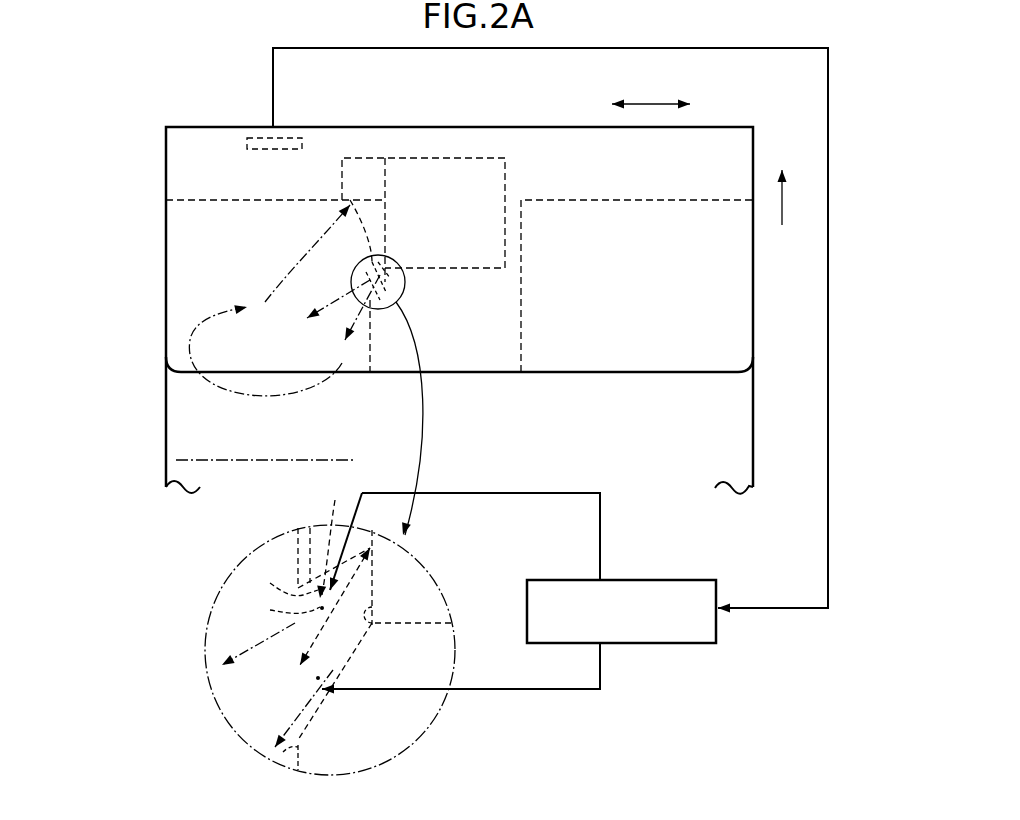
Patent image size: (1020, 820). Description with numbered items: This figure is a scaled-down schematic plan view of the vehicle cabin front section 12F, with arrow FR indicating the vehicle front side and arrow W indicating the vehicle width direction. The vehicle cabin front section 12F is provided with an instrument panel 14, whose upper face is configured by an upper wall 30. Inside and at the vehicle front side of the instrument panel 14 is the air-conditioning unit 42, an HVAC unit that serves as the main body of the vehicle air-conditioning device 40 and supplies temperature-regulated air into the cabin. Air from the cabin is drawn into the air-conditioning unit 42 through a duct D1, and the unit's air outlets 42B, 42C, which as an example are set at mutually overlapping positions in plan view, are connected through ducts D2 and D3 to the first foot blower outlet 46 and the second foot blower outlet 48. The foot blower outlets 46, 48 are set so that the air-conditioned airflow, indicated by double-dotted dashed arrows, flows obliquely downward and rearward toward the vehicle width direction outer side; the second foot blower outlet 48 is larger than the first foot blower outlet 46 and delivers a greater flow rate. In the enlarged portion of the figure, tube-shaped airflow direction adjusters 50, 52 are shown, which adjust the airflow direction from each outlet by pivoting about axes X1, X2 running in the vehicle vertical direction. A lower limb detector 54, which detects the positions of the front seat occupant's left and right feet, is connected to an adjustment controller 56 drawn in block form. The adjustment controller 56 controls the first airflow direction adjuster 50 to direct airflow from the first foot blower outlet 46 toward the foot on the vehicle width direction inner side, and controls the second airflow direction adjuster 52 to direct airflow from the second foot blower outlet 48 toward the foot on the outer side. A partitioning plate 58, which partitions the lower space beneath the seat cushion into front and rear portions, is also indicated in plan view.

The vehicle cabin front section 12F is at (133, 232).
The instrument panel 14 is at (722, 300).
The upper wall 30 is at (723, 337).
The lower limb detector 54 is at (263, 150).
The vehicle air-conditioning device 40 is at (465, 148).
The air-conditioning unit 42 is at (435, 149).
The air outlet 42B is at (375, 602).
The air outlet 42C is at (377, 560).
The first foot blower outlet 46 is at (273, 760).
The second foot blower outlet 48 is at (303, 595).
The first airflow direction adjuster 50 is at (342, 677).
The second airflow direction adjuster 52 is at (310, 528).
The adjustment controller 56 is at (635, 580).
The partitioning plate 58 is at (308, 460).
The duct D1 is at (365, 157).
The duct D2 is at (322, 718).
The duct D3 is at (331, 533).
The axis X1 is at (318, 678).
The axis X2 is at (322, 608).
The vehicle width direction W is at (652, 102).
The vehicle front side FR is at (782, 184).